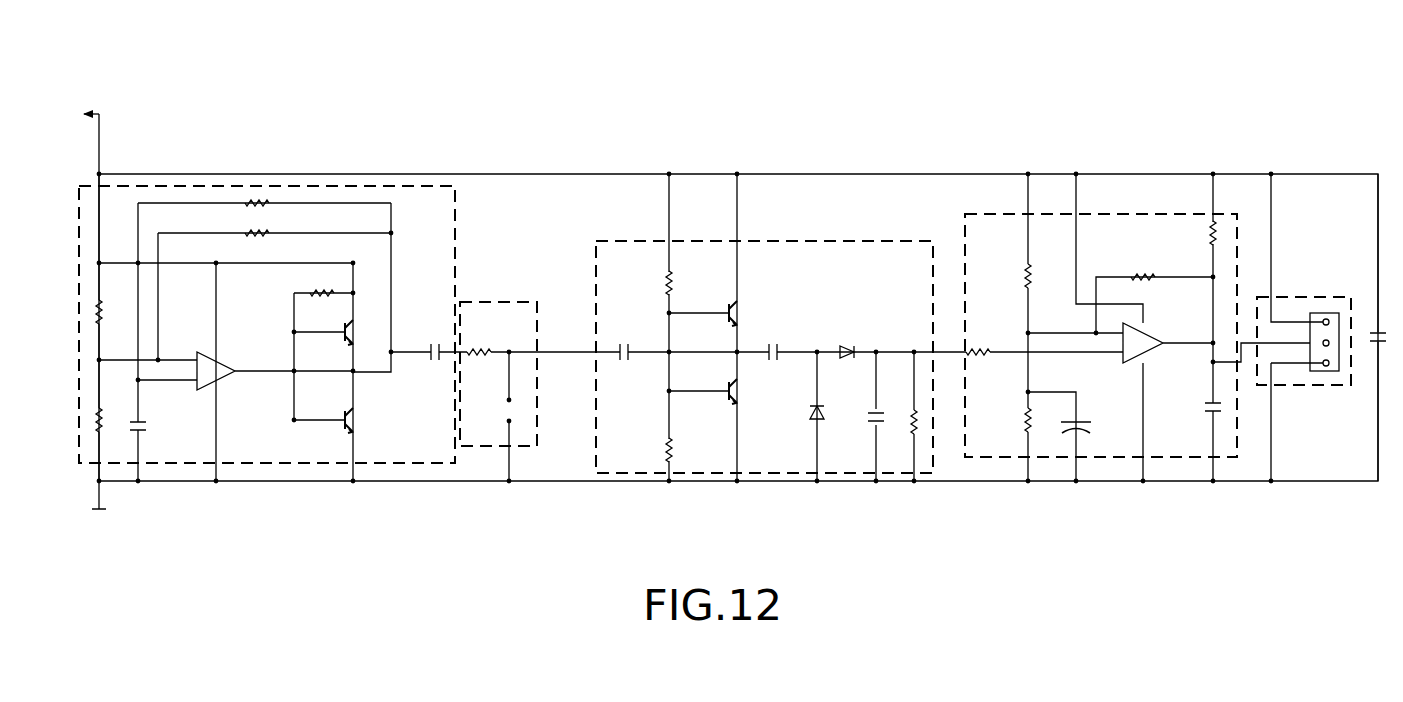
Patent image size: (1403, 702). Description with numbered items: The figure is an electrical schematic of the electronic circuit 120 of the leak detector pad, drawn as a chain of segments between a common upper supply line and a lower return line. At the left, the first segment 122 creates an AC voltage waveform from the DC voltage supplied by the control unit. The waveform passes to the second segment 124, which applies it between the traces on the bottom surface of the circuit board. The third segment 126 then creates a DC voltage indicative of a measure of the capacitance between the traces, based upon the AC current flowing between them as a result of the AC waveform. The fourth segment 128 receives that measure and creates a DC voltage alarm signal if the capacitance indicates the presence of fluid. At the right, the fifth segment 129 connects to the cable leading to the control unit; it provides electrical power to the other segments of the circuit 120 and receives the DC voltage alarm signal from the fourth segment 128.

The electronic circuit 120 is at (1013, 80).
The first segment 122 is at (383, 463).
The second segment 124 is at (527, 446).
The third segment 126 is at (775, 473).
The fourth segment 128 is at (1110, 457).
The fifth segment 129 is at (1316, 387).